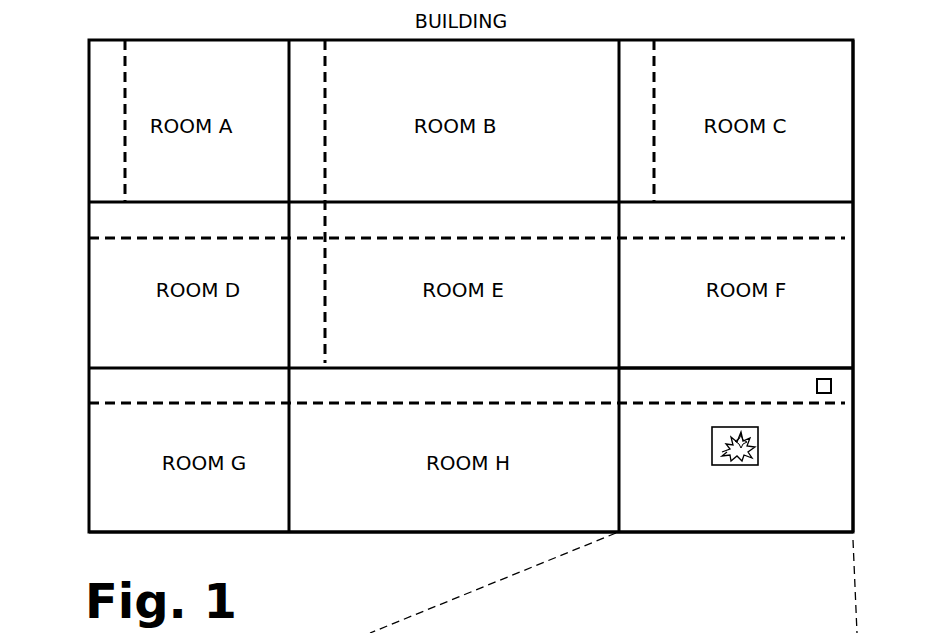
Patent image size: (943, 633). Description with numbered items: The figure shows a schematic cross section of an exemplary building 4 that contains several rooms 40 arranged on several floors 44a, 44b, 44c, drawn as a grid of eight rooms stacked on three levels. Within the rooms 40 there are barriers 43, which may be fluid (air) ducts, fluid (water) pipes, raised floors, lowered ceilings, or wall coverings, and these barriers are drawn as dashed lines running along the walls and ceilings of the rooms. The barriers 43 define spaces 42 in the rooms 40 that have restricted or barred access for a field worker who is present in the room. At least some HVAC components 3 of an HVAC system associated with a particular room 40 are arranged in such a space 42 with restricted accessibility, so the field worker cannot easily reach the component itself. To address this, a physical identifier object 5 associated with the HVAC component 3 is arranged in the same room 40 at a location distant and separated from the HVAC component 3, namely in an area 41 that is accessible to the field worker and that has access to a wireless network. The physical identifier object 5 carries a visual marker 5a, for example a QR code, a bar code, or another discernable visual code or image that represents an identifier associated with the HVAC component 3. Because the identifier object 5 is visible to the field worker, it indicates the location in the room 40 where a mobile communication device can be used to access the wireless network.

The HVAC component 3 is at (831, 386).
The building 4 is at (68, 490).
The physical identifier object 5 is at (719, 470).
The visual marker 5a is at (752, 462).
The room 40 is at (608, 475).
The area 41 is at (840, 503).
The space 42 is at (743, 375).
The barrier 43 is at (467, 247).
The floor 44a is at (866, 458).
The floor 44b is at (80, 348).
The floor 44c is at (80, 182).